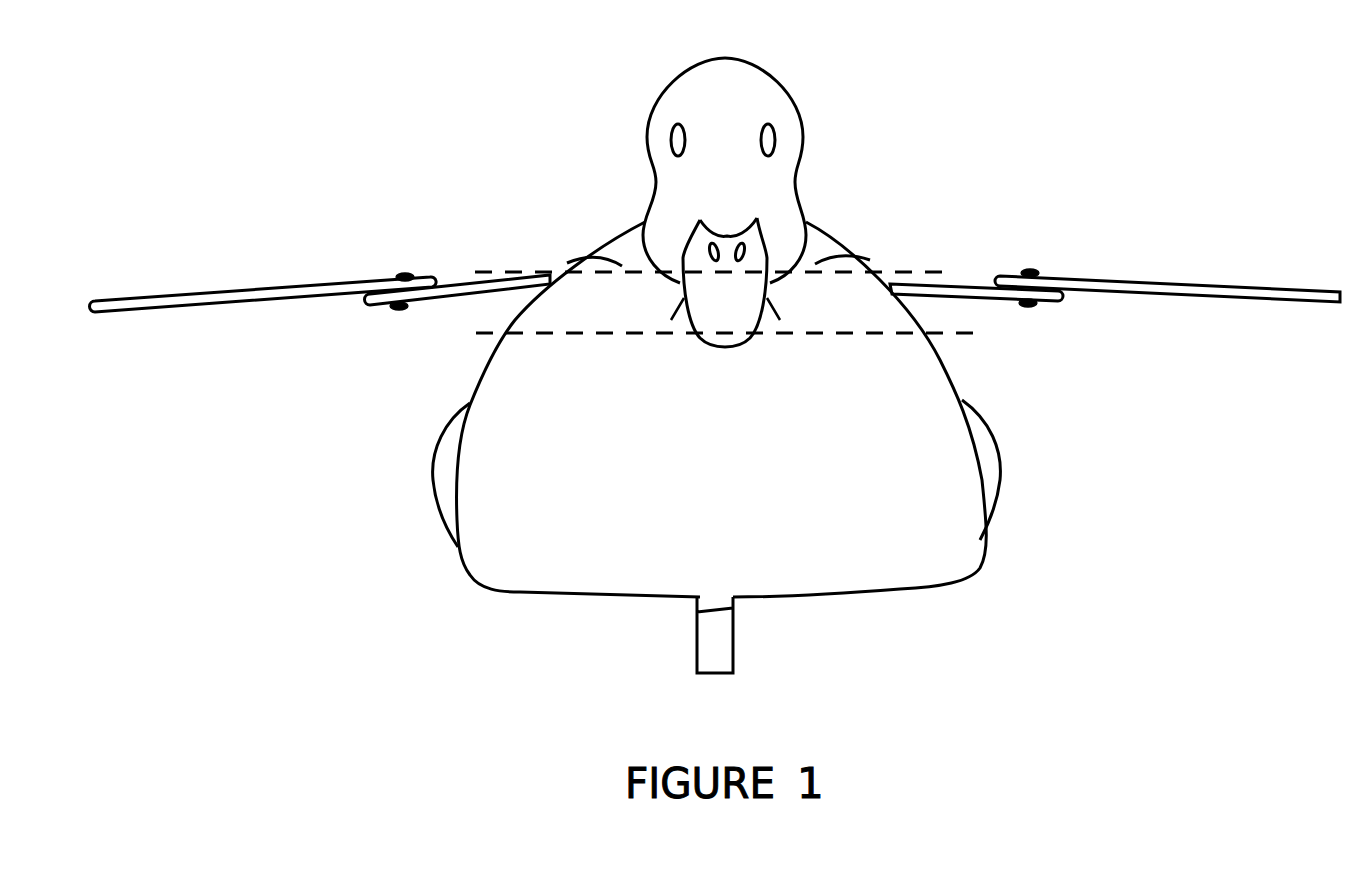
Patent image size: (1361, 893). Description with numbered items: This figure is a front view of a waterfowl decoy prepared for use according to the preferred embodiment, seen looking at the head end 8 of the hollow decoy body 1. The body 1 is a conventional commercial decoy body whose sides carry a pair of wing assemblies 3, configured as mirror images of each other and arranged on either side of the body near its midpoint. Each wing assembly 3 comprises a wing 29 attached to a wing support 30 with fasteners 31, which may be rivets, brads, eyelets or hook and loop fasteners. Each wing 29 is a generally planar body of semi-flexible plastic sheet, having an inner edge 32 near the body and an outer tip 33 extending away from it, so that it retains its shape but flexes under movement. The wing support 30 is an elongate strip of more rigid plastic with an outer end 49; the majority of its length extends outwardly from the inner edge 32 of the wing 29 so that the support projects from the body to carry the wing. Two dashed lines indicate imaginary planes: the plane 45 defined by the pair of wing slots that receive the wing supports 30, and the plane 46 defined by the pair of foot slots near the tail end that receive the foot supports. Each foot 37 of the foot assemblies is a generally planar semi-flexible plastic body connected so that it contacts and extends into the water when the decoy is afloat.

The decoy body 1 is at (907, 597).
The wing assembly 3 is at (445, 280).
The head end 8 is at (736, 477).
The wing 29 is at (250, 288).
The wing support 30 is at (424, 304).
The fasteners 31 is at (401, 272).
The inner edge 32 is at (996, 277).
The outer tip 33 is at (90, 306).
The foot 37 is at (442, 467).
The imaginary plane 45 is at (510, 273).
The imaginary plane 46 is at (479, 336).
The outer end 49 is at (368, 300).